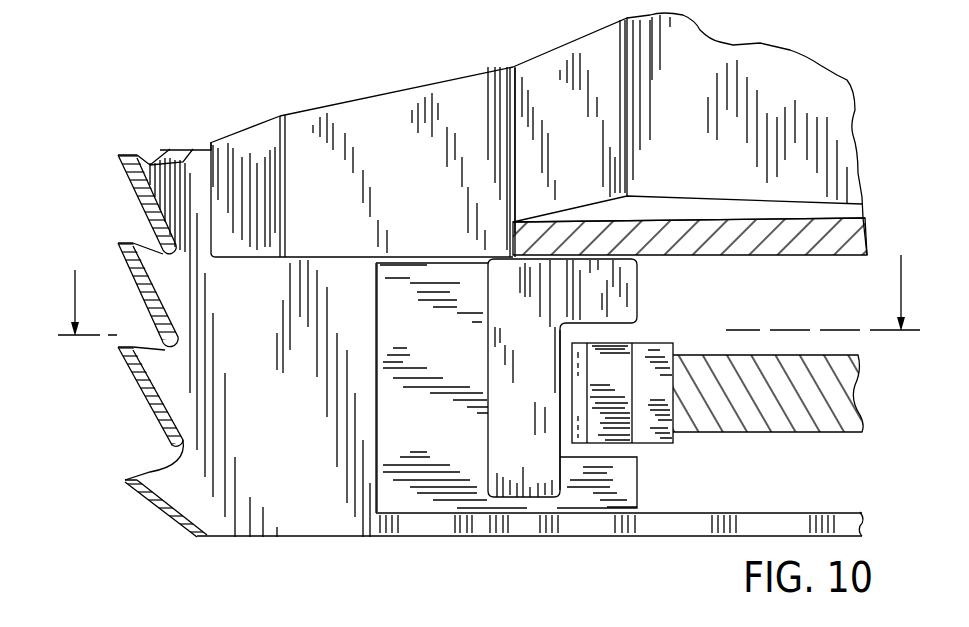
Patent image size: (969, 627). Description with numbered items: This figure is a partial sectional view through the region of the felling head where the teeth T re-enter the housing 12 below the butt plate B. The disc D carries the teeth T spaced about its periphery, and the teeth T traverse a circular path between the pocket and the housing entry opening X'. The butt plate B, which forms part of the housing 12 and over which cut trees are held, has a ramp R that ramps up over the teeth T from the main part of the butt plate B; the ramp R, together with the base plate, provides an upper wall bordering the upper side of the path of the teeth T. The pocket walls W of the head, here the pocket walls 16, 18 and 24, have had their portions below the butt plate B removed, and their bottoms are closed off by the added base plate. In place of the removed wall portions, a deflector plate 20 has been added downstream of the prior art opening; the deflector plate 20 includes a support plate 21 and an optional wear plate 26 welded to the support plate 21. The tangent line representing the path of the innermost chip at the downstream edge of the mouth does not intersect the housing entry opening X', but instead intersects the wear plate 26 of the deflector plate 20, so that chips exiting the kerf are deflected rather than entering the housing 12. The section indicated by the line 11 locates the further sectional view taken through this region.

The section line 11- 11 is at (490, 312).
The housing 12 is at (600, 537).
The pocket wall 16 is at (386, 128).
The pocket wall 18 is at (252, 137).
The deflector plate 20 is at (372, 341).
The support plate 21 is at (393, 402).
The pocket wall 24 is at (549, 60).
The wear plate 26 is at (498, 457).
The pocket walls W is at (805, 80).
The ramp R is at (740, 215).
The butt plate B is at (763, 268).
The disc D is at (720, 353).
The teeth T is at (620, 343).
The housing entry opening X' is at (536, 410).